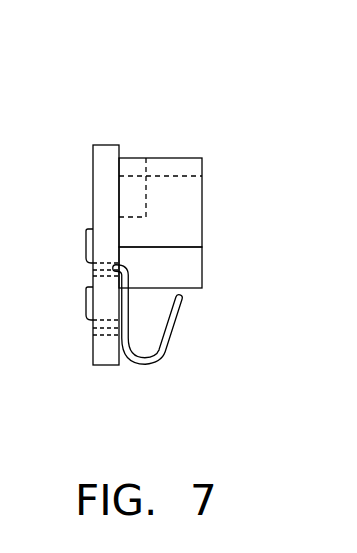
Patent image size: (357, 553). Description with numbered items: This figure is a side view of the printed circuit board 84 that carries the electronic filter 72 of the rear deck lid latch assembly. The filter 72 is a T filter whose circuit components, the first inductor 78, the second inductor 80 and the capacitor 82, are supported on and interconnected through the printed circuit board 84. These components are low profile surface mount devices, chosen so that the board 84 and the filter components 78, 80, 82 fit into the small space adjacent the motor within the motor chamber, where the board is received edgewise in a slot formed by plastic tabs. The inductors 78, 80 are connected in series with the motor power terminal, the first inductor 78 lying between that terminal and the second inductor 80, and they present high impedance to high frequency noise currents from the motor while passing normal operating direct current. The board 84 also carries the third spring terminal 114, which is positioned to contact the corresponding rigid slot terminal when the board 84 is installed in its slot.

The electronic filter 72 is at (172, 204).
The first inductor 78 is at (188, 193).
The second inductor 80 is at (190, 280).
The capacitor 82 is at (135, 187).
The printed circuit board 84 is at (103, 172).
The third spring terminal 114 is at (166, 356).